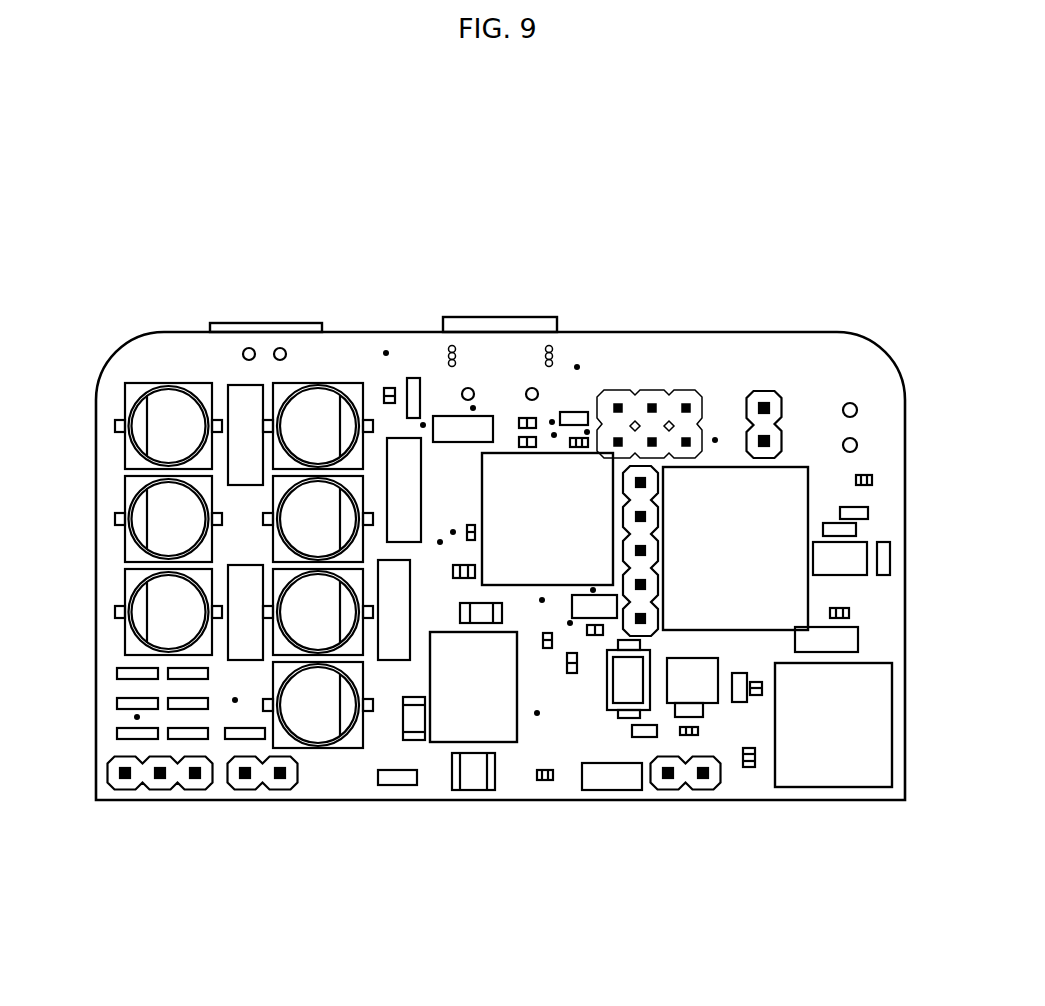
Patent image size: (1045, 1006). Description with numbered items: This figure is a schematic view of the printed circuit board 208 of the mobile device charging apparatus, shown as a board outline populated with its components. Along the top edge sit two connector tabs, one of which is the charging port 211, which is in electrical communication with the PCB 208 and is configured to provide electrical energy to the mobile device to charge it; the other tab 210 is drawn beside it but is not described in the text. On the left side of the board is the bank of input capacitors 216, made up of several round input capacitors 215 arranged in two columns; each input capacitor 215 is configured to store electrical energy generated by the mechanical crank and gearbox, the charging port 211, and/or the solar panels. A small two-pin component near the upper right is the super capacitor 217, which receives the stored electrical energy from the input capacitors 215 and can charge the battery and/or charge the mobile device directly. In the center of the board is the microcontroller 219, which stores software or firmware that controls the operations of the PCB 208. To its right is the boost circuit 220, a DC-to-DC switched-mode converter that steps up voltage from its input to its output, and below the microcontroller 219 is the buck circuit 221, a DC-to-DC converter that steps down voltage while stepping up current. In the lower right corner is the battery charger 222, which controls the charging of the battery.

The printed circuit board 208 is at (104, 199).
The first connector tab 210 is at (266, 297).
The charging port 211 is at (483, 290).
The input capacitor 215 is at (167, 612).
The bank of input capacitors 216 is at (201, 525).
The super capacitor 217 is at (765, 392).
The microcontroller 219 is at (567, 505).
The boost circuit 220 is at (783, 495).
The buck circuit 221 is at (497, 715).
The battery charger 222 is at (832, 748).